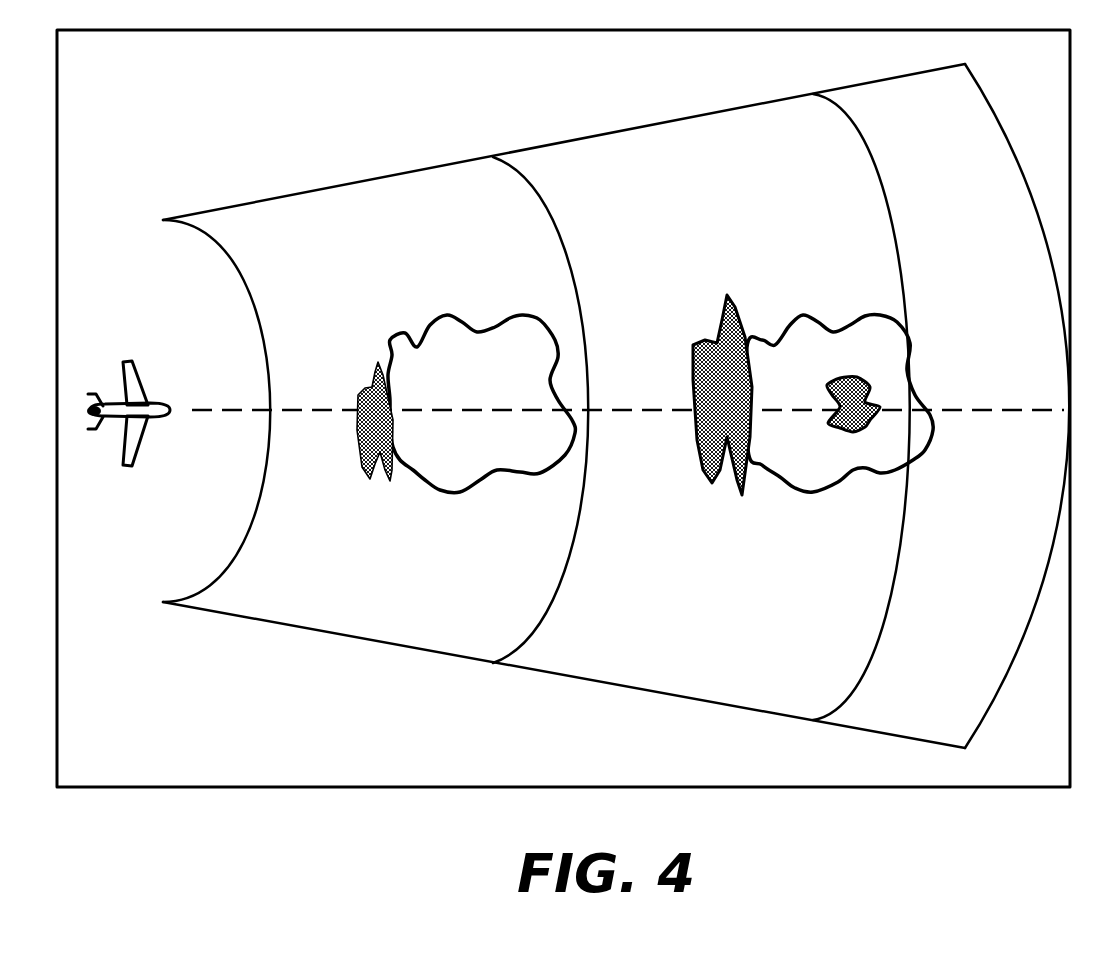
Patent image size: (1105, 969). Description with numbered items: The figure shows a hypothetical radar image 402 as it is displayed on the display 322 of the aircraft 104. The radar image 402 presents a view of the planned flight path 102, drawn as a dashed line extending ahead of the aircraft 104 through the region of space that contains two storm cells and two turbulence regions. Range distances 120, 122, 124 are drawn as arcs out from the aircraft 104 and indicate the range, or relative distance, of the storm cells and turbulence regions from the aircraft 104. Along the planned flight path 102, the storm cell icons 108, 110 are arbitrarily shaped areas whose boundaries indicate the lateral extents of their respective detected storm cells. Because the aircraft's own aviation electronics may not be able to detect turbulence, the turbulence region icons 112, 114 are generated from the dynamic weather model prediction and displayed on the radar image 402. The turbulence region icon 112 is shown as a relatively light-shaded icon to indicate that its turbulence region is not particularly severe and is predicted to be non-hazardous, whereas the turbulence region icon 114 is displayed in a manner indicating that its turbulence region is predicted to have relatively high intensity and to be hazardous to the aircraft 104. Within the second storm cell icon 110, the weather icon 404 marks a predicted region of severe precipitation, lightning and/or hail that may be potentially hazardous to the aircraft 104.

The display 322 is at (163, 789).
The radar image 402 is at (967, 817).
The range distance 120 is at (260, 246).
The range distance 122 is at (590, 220).
The range distance 124 is at (900, 146).
The planned flight path 102 is at (281, 411).
The aircraft 104 is at (127, 481).
The storm cell icon 108 is at (435, 315).
The storm cell icon 110 is at (798, 315).
The turbulence region icon 112 is at (388, 483).
The turbulence region icon 114 is at (742, 497).
The weather icon 404 is at (827, 387).